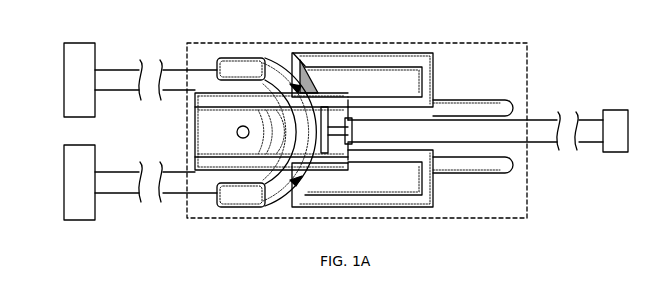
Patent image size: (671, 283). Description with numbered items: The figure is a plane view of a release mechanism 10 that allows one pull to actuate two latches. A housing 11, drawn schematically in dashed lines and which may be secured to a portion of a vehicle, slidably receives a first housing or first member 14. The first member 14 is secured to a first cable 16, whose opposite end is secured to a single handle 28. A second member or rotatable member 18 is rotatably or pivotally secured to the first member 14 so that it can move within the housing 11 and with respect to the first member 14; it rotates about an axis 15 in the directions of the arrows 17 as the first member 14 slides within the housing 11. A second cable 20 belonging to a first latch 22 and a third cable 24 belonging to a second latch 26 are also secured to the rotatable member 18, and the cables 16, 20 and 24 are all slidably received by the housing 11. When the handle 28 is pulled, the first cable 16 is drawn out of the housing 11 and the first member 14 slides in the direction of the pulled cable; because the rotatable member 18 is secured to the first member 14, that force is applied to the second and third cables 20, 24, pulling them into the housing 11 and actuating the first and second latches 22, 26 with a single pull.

The release mechanism 10 is at (548, 93).
The housing 11 is at (511, 43).
The first housing or first member 14 is at (370, 75).
The axis 15 is at (240, 131).
The first cable 16 is at (538, 143).
The arrows 17 is at (316, 92).
The rotatable member 18 is at (250, 60).
The second cable 20 is at (115, 70).
The first latch 22 is at (69, 43).
The third cable 24 is at (115, 172).
The second latch 26 is at (69, 145).
The handle 28 is at (624, 110).